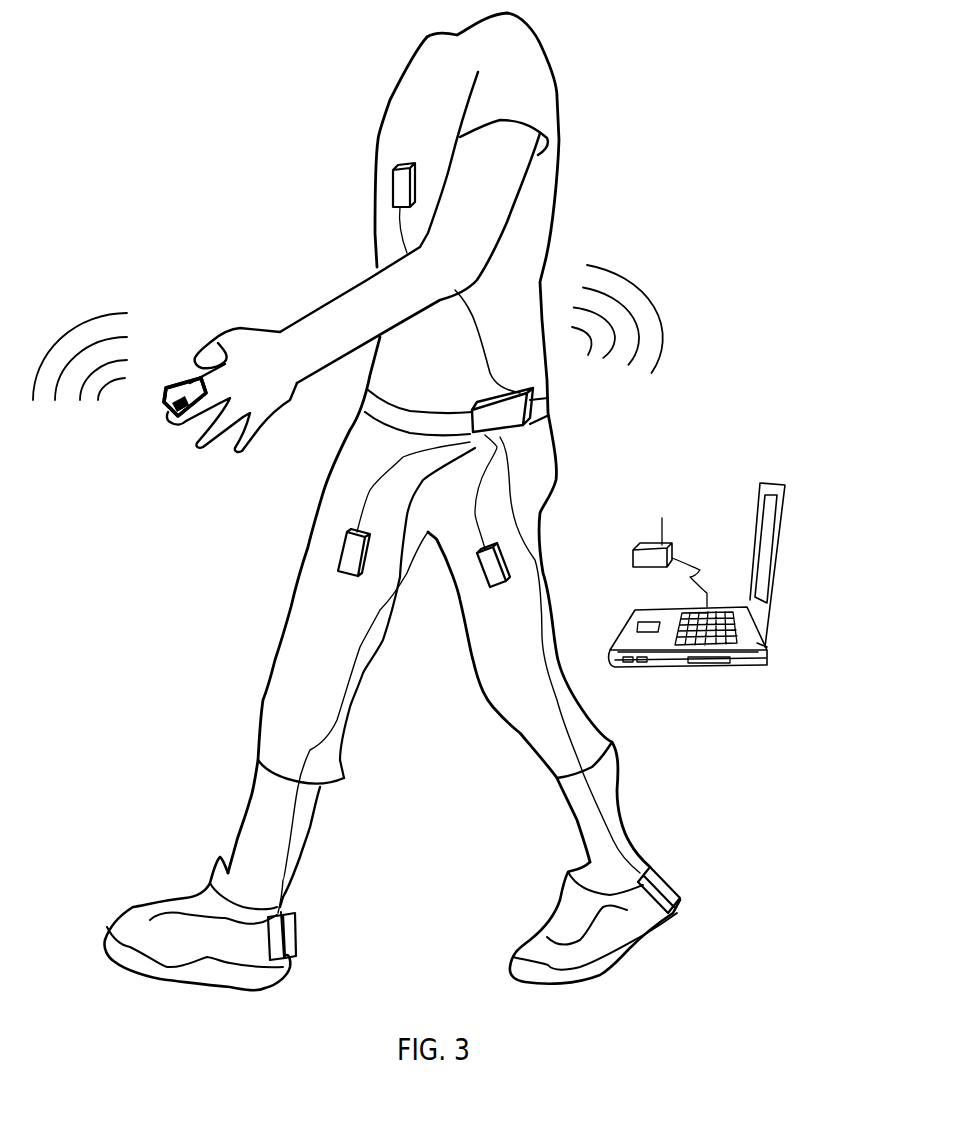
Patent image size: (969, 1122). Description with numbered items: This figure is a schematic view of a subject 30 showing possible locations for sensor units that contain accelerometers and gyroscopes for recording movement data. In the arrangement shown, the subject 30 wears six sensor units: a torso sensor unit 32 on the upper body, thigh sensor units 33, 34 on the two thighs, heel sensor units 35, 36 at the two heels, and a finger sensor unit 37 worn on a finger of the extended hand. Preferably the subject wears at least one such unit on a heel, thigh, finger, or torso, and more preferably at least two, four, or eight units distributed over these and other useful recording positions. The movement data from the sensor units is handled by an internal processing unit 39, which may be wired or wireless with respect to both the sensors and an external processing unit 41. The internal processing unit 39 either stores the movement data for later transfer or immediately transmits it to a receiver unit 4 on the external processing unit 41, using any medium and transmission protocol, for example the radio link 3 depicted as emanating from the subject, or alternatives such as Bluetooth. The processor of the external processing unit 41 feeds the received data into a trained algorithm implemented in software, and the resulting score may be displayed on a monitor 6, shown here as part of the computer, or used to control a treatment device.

The subject 30 is at (570, 77).
The torso sensor unit 32 is at (387, 180).
The thigh sensor unit 33 is at (473, 577).
The thigh sensor unit 34 is at (330, 550).
The heel sensor unit 35 is at (297, 933).
The heel sensor unit 36 is at (667, 877).
The finger sensor unit 37 is at (185, 382).
The internal processing unit 39 is at (167, 413).
The radio link 3 is at (70, 305).
The receiver unit 4 is at (648, 525).
The monitor 6 is at (701, 588).
The external processing unit 41 is at (702, 675).